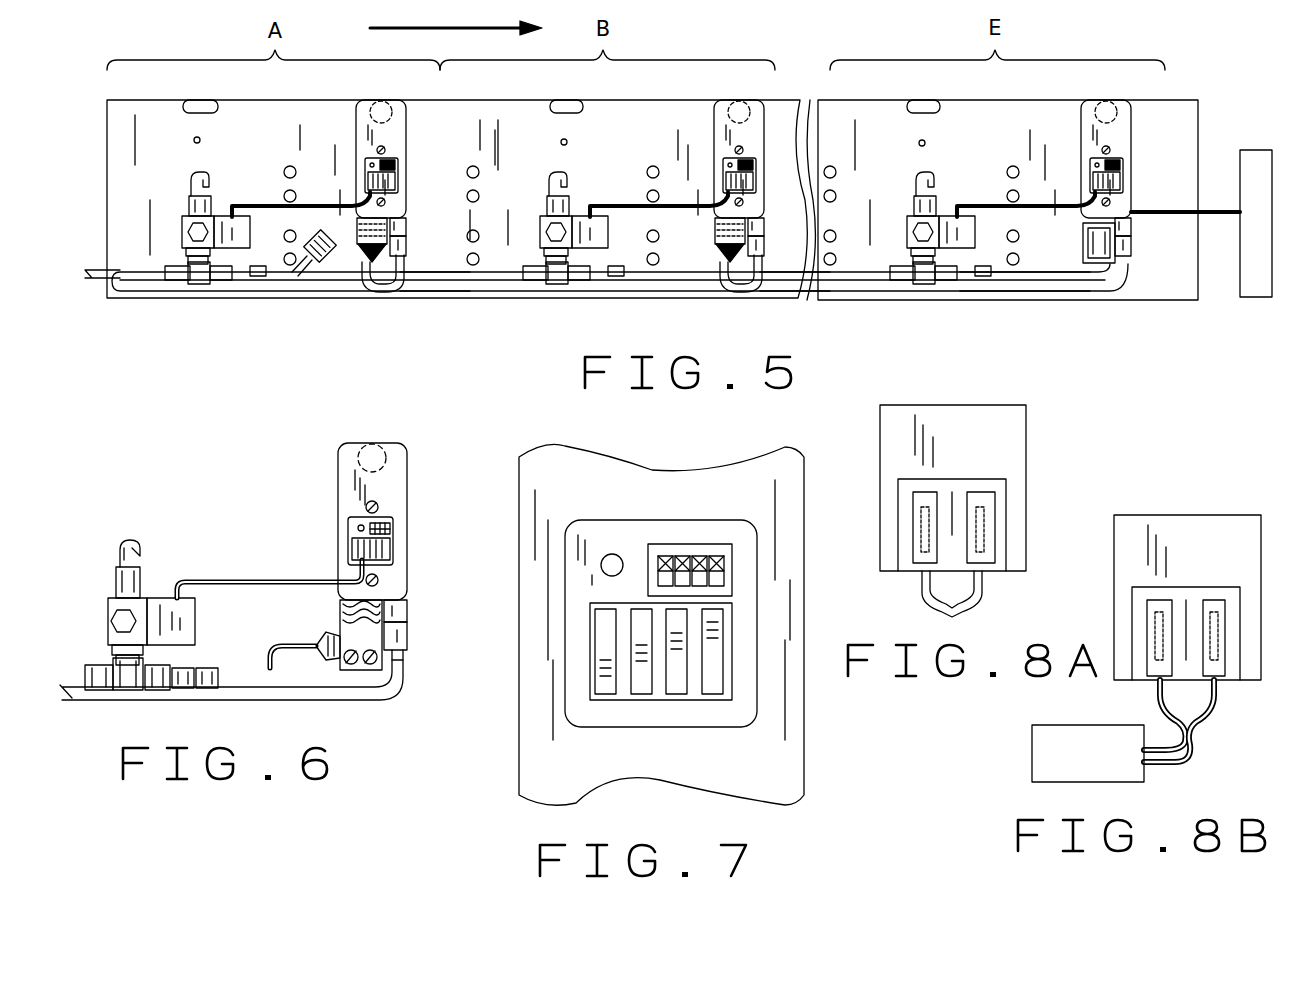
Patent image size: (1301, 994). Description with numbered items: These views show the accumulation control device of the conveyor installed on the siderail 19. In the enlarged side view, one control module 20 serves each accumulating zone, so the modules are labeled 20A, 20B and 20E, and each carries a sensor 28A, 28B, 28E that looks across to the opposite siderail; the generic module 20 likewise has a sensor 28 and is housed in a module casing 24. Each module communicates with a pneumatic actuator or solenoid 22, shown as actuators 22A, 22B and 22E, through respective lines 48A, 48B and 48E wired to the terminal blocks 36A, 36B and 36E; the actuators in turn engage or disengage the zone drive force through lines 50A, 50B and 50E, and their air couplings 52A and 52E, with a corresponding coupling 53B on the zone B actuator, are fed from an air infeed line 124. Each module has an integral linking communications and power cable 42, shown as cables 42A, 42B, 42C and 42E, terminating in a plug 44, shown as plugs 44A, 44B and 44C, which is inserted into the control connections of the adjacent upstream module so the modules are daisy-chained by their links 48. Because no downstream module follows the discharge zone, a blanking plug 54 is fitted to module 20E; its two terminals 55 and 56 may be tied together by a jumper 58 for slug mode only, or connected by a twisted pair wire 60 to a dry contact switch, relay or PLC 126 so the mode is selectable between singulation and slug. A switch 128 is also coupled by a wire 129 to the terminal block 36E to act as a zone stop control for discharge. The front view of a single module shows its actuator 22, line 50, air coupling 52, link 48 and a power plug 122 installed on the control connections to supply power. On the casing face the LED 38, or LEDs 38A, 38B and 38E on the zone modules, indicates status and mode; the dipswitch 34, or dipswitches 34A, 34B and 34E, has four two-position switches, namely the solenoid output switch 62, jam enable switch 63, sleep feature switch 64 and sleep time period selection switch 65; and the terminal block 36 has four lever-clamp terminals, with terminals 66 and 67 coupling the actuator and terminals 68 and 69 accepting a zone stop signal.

In FIG. 5, the siderail 19 is at (1016, 172).
In FIG. 6, the control module 20 is at (345, 452).
In FIG. 5, the infeed zone module 20A is at (356, 104).
In FIG. 5, the zone B module 20B is at (721, 144).
In FIG. 5, the discharge zone module 20E is at (1133, 124).
In FIG. 6, the actuator 22 is at (160, 598).
In FIG. 5, the zone A actuator 22A is at (224, 216).
In FIG. 5, the zone B actuator 22B is at (594, 203).
In FIG. 5, the zone E actuator 22E is at (952, 195).
In FIG. 7, the module casing 24 is at (800, 770).
In FIG. 6, the sensor 28 is at (372, 442).
In FIG. 5, the zone A sensor 28A is at (380, 106).
In FIG. 5, the zone B sensor 28B is at (747, 75).
In FIG. 5, the zone E sensor 28E is at (1101, 96).
In FIG. 6, the dipswitch 34 is at (392, 528).
In FIG. 7, the dipswitch 34 is at (735, 575).
In FIG. 5, the zone A dipswitch 34A is at (395, 162).
In FIG. 5, the zone B dipswitch 34B is at (777, 113).
In FIG. 5, the zone E dipswitch 34E is at (1182, 129).
In FIG. 6, the terminal block 36 is at (392, 548).
In FIG. 7, the terminal block 36 is at (592, 690).
In FIG. 5, the zone A terminal block 36A is at (394, 182).
In FIG. 5, the zone B terminal block 36B is at (796, 105).
In FIG. 5, the zone E terminal block 36E is at (1176, 153).
In FIG. 6, the LED 38 is at (356, 528).
In FIG. 7, the LED 38 is at (609, 554).
In FIG. 5, the zone A LED 38A is at (372, 163).
In FIG. 5, the zone B LED 38B is at (674, 118).
In FIG. 5, the zone E LED 38E is at (1049, 118).
In FIG. 6, the linking communications/power cable 42 is at (275, 660).
In FIG. 5, the zone A linking cable 42A is at (335, 293).
In FIG. 5, the zone B linking cable 42B is at (430, 293).
In FIG. 5, the zone C linking cable 42C is at (790, 293).
In FIG. 5, the zone E linking cable 42E is at (1050, 294).
In FIG. 6, the plug 44 is at (325, 660).
In FIG. 5, the zone A plug 44A is at (320, 258).
In FIG. 5, the zone B plug 44B is at (372, 262).
In FIG. 5, the zone C plug 44C is at (719, 275).
In FIG. 6, the link 48 is at (258, 582).
In FIG. 5, the zone A actuator line 48A is at (266, 206).
In FIG. 5, the zone B actuator line 48B is at (659, 172).
In FIG. 5, the zone E actuator line 48E is at (1026, 166).
In FIG. 6, the drive force line 50 is at (128, 540).
In FIG. 5, the zone A drive force line 50A is at (190, 180).
In FIG. 5, the zone B drive force line 50B is at (526, 151).
In FIG. 5, the zone E drive force line 50E is at (887, 152).
In FIG. 6, the air coupling 52 is at (127, 665).
In FIG. 5, the zone A air coupling 52A is at (200, 265).
In FIG. 5, the zone E air coupling 52E is at (940, 271).
In FIG. 5, the valve and tee fitting of zone B 53B is at (564, 269).
In FIG. 5, the blanking plug 54 is at (1101, 282).
In FIG. 8A, the blanking plug 54 is at (1052, 443).
In FIG. 8B, the blanking plug 54 is at (1234, 493).
In FIG. 8A, the blanking plug terminal 55 is at (990, 500).
In FIG. 8B, the blanking plug terminal 55 is at (1217, 614).
In FIG. 8A, the blanking plug terminal 56 is at (925, 500).
In FIG. 8B, the blanking plug terminal 56 is at (1163, 612).
In FIG. 8A, the jumper 58 is at (972, 596).
In FIG. 8B, the twisted pair wire 60 is at (1193, 756).
In FIG. 7, the solenoid output switch 62 is at (663, 556).
In FIG. 7, the jam enable switch 63 is at (680, 556).
In FIG. 7, the sleep feature switch 64 is at (698, 556).
In FIG. 7, the sleep time period selection switch 65 is at (715, 556).
In FIG. 7, the actuator terminal 66 is at (606, 688).
In FIG. 7, the actuator terminal 67 is at (642, 688).
In FIG. 7, the zone stop terminal 68 is at (676, 688).
In FIG. 7, the zone stop terminal 69 is at (712, 688).
In FIG. 6, the power plug 122 is at (403, 672).
In FIG. 5, the air infeed line 124 is at (100, 275).
In FIG. 8B, the dry contact switch 126 is at (1032, 758).
In FIG. 5, the zone stop switch 128 is at (1255, 243).
In FIG. 5, the wire 129 is at (1185, 279).